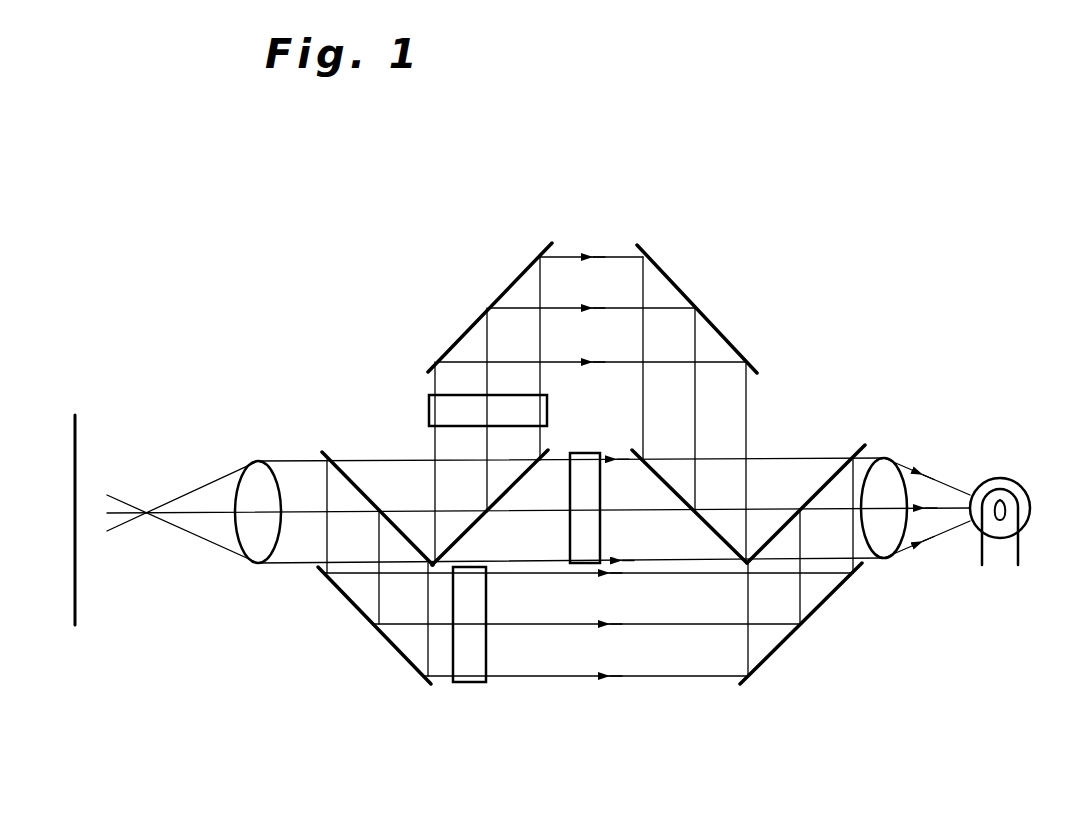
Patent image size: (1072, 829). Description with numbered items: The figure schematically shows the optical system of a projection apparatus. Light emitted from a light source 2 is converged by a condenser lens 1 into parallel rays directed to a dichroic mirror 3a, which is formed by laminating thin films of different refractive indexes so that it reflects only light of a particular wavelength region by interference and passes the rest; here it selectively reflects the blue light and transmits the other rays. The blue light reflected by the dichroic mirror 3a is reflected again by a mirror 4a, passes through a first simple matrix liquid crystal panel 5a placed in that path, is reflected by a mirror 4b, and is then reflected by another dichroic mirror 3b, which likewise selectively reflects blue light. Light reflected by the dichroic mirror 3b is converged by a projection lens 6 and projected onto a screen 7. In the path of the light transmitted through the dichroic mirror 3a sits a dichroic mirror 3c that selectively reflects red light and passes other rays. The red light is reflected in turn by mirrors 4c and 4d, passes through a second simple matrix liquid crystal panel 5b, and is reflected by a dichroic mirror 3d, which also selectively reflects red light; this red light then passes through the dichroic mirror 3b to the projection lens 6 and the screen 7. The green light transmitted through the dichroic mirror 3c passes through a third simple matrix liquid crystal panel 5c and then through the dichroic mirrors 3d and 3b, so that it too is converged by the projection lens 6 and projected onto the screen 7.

The condenser lens 1 is at (885, 542).
The light source 2 is at (1010, 490).
The dichroic mirror 3a is at (823, 480).
The dichroic mirror 3b is at (360, 488).
The dichroic mirror 3c is at (672, 492).
The dichroic mirror 3d is at (472, 532).
The mirror 4a is at (782, 643).
The mirror 4b is at (350, 607).
The mirror 4c is at (677, 283).
The mirror 4d is at (507, 293).
The first simple matrix liquid crystal panel 5a is at (470, 682).
The second simple matrix liquid crystal panel 5b is at (428, 407).
The third simple matrix liquid crystal panel 5c is at (603, 530).
The projection lens 6 is at (260, 547).
The screen 7 is at (75, 565).